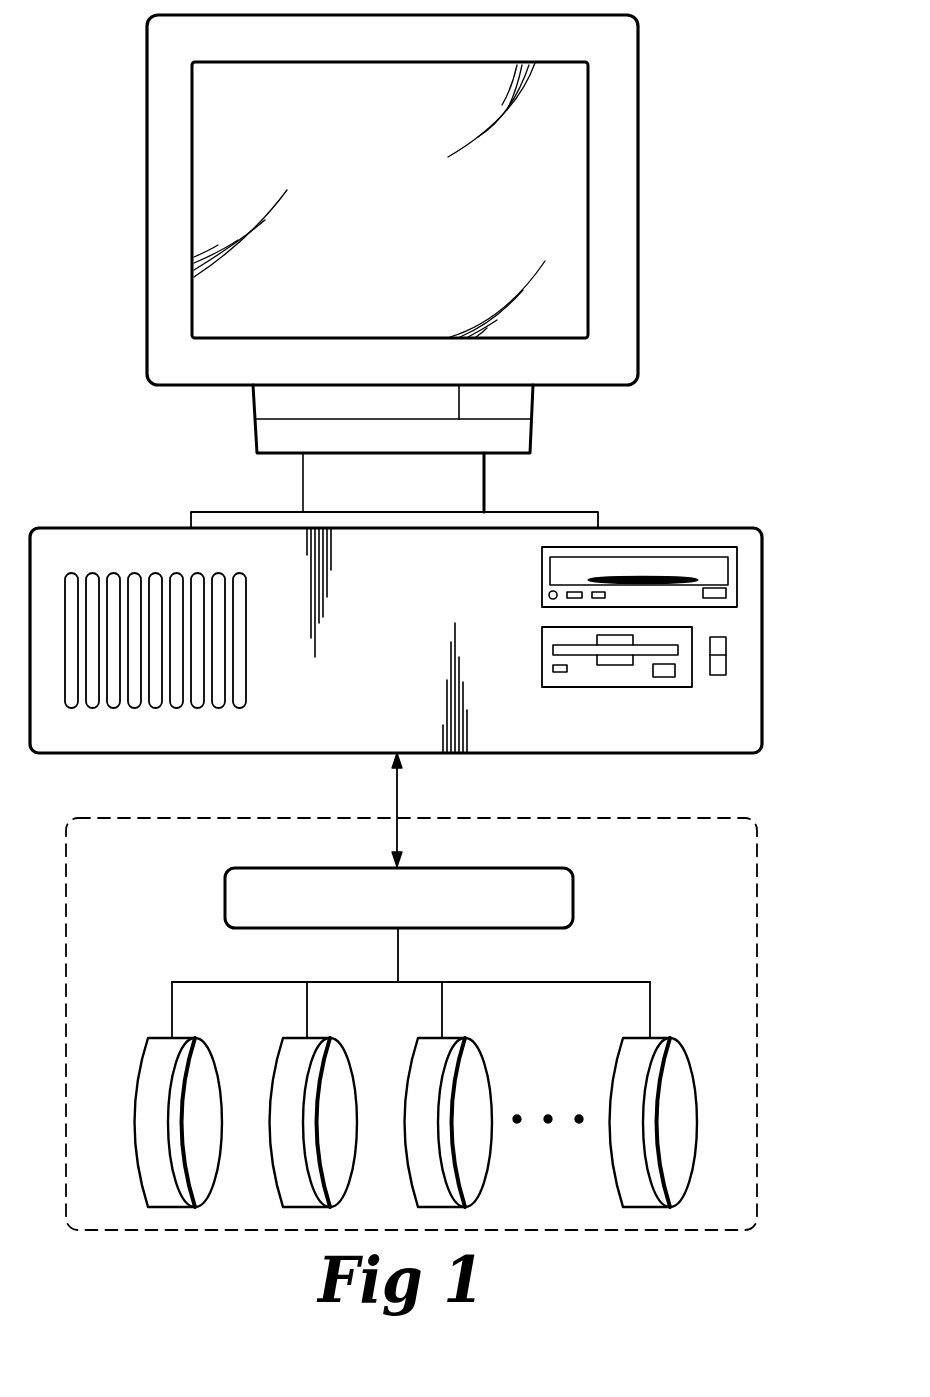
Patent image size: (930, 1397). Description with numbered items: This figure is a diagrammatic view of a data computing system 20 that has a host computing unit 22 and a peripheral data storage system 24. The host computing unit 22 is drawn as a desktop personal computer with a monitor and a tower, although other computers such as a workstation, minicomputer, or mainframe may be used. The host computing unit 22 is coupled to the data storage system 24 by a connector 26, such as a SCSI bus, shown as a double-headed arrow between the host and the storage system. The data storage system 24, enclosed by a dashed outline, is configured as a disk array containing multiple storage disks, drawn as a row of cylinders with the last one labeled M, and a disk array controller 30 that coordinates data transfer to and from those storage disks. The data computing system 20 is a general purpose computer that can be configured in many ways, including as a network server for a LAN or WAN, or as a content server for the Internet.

The data computing system 20 is at (706, 190).
The host computing unit 22 is at (692, 527).
The peripheral data storage system 24 is at (758, 878).
The connector 26 is at (400, 808).
The disk array controller 30 is at (533, 875).